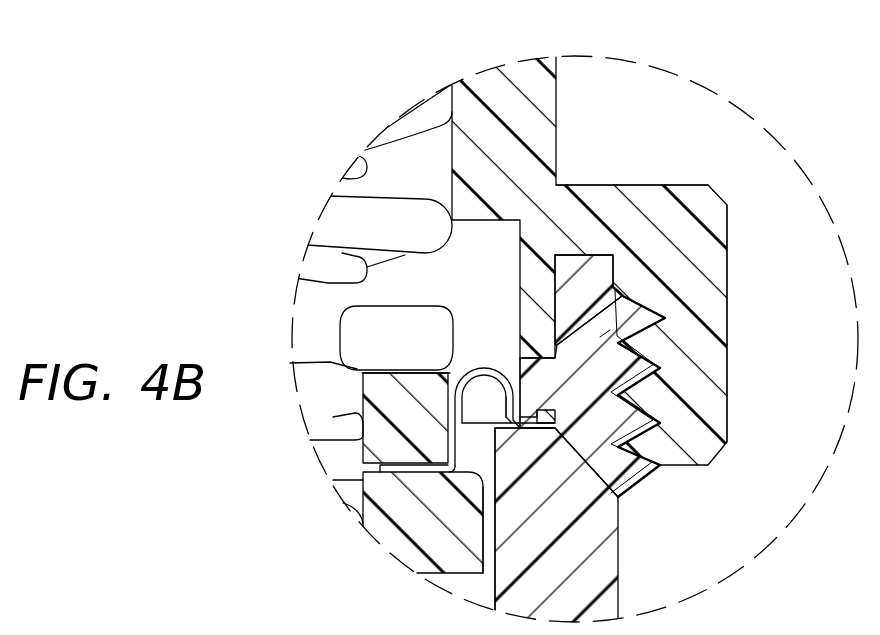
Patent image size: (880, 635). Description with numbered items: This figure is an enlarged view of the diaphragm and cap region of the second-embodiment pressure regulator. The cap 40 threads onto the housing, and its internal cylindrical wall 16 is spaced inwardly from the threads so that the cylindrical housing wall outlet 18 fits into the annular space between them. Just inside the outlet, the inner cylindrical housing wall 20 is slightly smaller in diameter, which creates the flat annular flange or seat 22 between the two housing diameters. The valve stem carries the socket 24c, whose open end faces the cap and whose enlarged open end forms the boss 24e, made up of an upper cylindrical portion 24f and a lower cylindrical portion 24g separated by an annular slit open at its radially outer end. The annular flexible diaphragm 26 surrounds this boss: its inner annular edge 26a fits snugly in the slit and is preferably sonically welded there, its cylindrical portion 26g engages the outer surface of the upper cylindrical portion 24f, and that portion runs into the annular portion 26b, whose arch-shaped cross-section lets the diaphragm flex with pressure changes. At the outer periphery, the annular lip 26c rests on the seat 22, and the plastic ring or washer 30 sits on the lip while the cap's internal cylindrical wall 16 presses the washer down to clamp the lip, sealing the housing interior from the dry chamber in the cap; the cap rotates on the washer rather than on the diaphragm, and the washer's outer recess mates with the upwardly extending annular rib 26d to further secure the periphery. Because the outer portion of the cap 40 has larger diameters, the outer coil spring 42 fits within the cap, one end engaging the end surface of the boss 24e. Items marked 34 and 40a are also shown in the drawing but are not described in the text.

The internal cylindrical wall 16 is at (540, 275).
The cylindrical housing wall outlet 18 is at (577, 257).
The inner cylindrical housing wall 20 is at (497, 455).
The annular flange or seat 22 is at (660, 470).
The socket 24c is at (348, 393).
The boss 24e is at (310, 450).
The upper cylindrical portion 24f is at (358, 452).
The lower cylindrical portion 24g is at (387, 522).
The annular flexible diaphragm 26 is at (477, 358).
The inner annular edge 26a is at (422, 467).
The annular portion 26b is at (505, 368).
The annular lip 26c is at (507, 410).
The annular rib 26d is at (560, 377).
The cylindrical portion 26g is at (455, 412).
The plastic ring or washer 30 is at (600, 337).
The thread 34 is at (342, 157).
The cap 40 is at (562, 82).
The housing wall surface 40a is at (705, 312).
The outer coil spring 42 is at (425, 117).